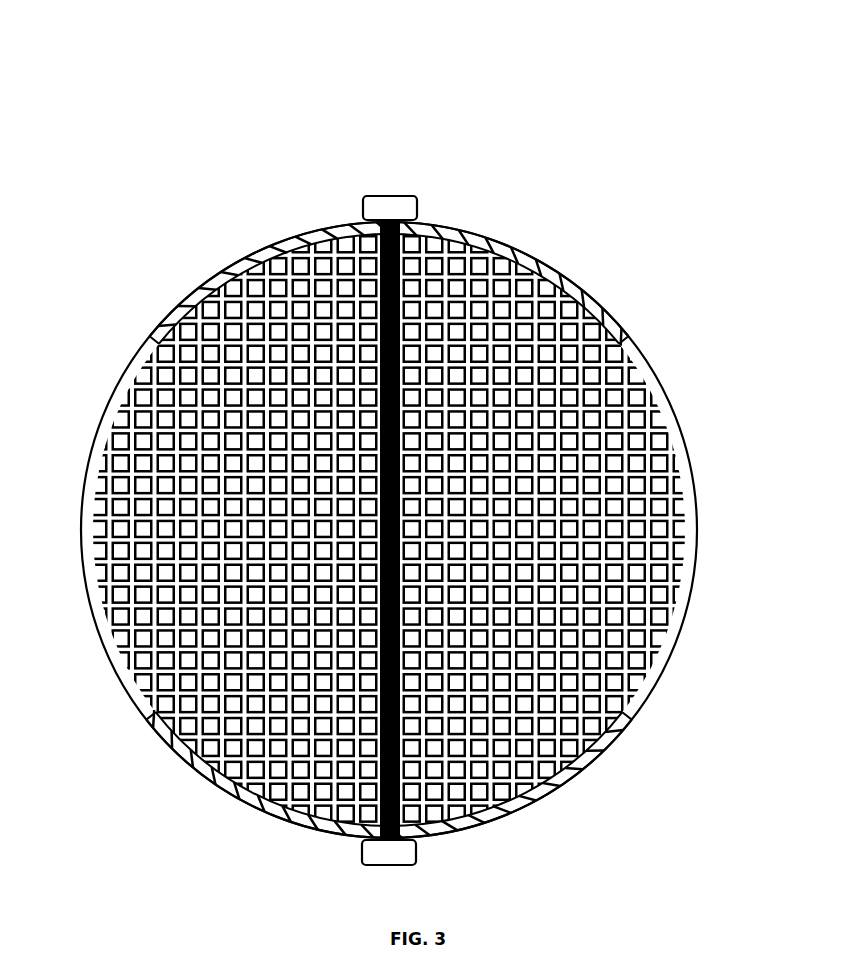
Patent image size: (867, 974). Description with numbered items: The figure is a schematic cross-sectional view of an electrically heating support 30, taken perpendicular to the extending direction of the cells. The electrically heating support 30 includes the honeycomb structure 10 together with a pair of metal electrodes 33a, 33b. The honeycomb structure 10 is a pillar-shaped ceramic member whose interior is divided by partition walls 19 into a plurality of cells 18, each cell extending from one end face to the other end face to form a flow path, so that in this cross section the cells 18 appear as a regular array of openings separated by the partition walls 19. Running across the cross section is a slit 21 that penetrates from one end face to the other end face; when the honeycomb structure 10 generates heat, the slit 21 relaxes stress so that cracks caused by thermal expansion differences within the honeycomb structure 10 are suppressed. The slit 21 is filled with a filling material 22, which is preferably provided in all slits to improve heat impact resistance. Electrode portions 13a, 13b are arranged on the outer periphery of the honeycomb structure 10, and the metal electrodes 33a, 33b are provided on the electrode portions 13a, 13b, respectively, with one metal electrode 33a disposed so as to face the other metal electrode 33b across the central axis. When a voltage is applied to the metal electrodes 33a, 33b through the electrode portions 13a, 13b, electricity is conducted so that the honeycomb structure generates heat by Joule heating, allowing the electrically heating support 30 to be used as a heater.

The electrically heating support 30 is at (370, 459).
The honeycomb structure 10 is at (472, 228).
The electrode portion 13a is at (570, 273).
The electrode portion 13b is at (578, 780).
The cells 18 is at (367, 539).
The partition walls 19 is at (162, 428).
The slit 21 is at (380, 387).
The filling material 22 is at (380, 727).
The metal electrode 33a is at (363, 210).
The metal electrode 33b is at (362, 852).